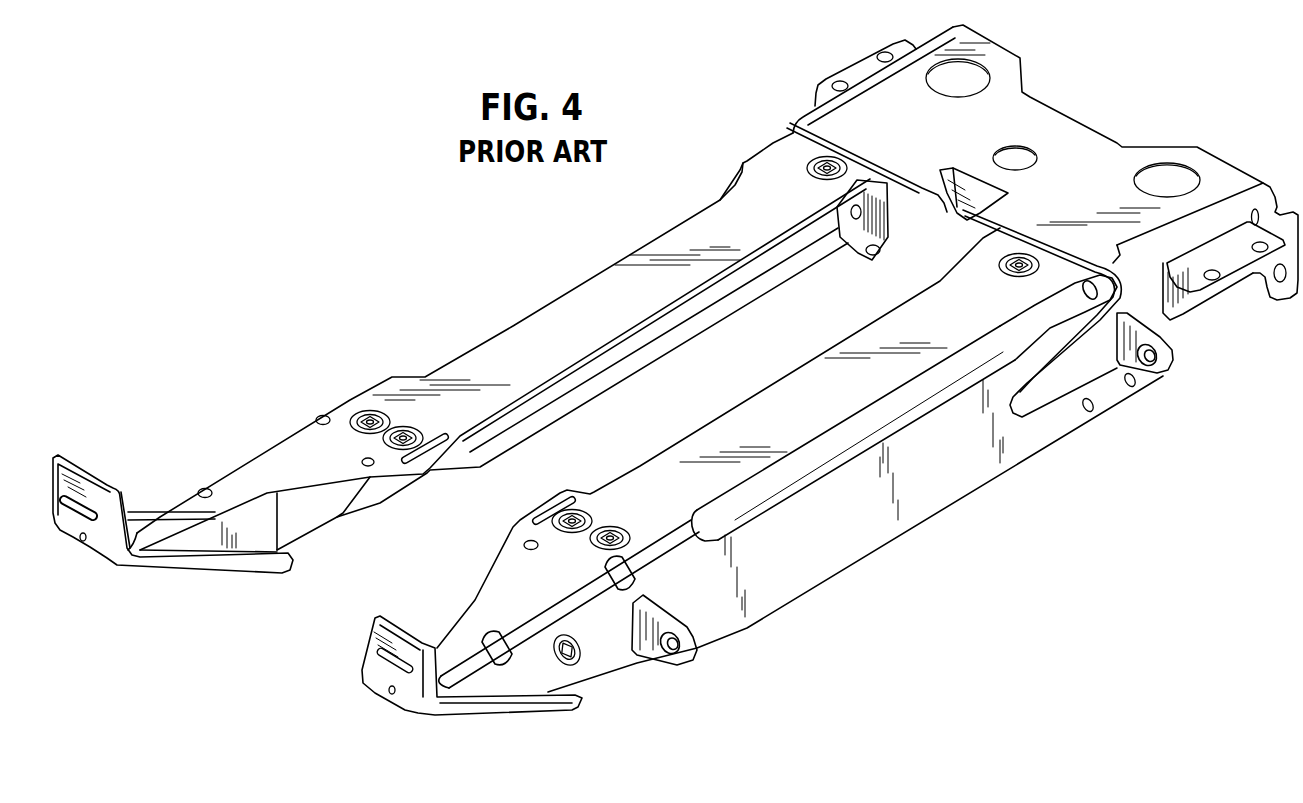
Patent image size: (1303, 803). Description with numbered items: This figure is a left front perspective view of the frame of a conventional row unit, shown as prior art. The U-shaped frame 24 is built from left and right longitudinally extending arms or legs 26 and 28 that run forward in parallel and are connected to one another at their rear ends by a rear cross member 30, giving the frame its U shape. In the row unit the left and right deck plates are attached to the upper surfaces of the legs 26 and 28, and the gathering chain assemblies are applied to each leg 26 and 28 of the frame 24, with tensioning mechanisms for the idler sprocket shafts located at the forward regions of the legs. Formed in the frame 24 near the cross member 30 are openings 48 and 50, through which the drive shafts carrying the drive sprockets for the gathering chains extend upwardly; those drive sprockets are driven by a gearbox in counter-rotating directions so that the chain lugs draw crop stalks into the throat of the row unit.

The U-shaped frame 24 is at (224, 188).
The left leg 26 is at (820, 555).
The right leg 28 is at (507, 318).
The rear cross member 30 is at (1062, 134).
The opening 48 is at (1173, 180).
The opening 50 is at (962, 78).